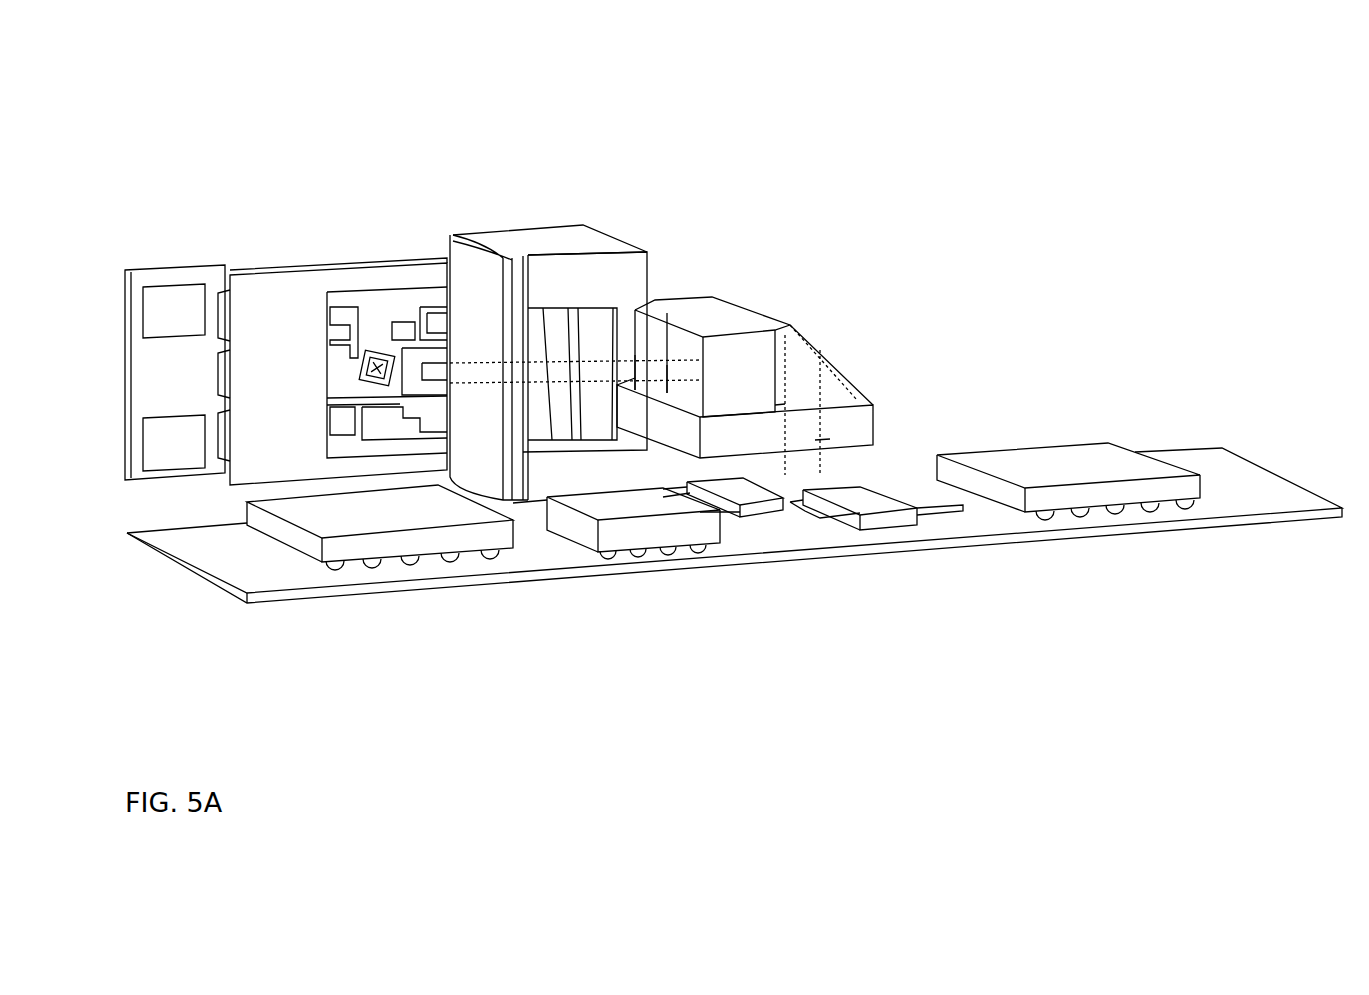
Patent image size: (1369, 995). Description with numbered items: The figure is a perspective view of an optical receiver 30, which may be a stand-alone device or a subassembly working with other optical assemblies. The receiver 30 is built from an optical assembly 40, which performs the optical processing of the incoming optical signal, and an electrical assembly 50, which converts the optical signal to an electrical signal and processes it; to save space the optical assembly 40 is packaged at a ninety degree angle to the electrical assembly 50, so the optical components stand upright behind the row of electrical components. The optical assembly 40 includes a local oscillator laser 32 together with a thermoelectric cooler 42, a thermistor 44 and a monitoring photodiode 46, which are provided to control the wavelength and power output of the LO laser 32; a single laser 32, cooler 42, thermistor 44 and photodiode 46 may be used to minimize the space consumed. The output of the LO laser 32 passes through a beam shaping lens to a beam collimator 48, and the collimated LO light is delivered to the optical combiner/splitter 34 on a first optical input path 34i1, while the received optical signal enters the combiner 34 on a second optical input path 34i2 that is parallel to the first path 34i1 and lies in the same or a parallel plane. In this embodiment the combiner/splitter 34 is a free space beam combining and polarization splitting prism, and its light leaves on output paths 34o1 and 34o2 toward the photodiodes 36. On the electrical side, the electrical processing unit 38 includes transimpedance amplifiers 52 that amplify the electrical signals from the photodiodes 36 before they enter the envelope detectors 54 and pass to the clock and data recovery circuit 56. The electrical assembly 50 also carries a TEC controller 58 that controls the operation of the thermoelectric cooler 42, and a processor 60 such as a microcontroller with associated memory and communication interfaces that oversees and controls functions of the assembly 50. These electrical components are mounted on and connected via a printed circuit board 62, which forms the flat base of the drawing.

The optical receiver 30 is at (392, 647).
The local oscillator laser 32 is at (377, 352).
The optical combiner/splitter 34 is at (755, 310).
The first optical input path 34i1 is at (635, 360).
The second optical input path 34i2 is at (675, 373).
The first optical output path 34o1 is at (785, 408).
The second optical output path 34o2 is at (823, 435).
The photodiode 36 is at (813, 518).
The electrical processing unit 38 is at (896, 440).
The optical assembly 40 is at (668, 164).
The thermoelectric cooler 42 is at (247, 283).
The thermistor 44 is at (397, 322).
The monitoring photodiode 46 is at (160, 273).
The beam collimator 48 is at (515, 225).
The electrical assembly 50 is at (1049, 645).
The transimpedance amplifier 52 is at (750, 517).
The envelope detector 54 is at (617, 543).
The clock and data recovery circuit 56 is at (1187, 498).
The TEC controller 58 is at (297, 555).
The processor 60 is at (567, 555).
The printed circuit board 62 is at (1248, 517).